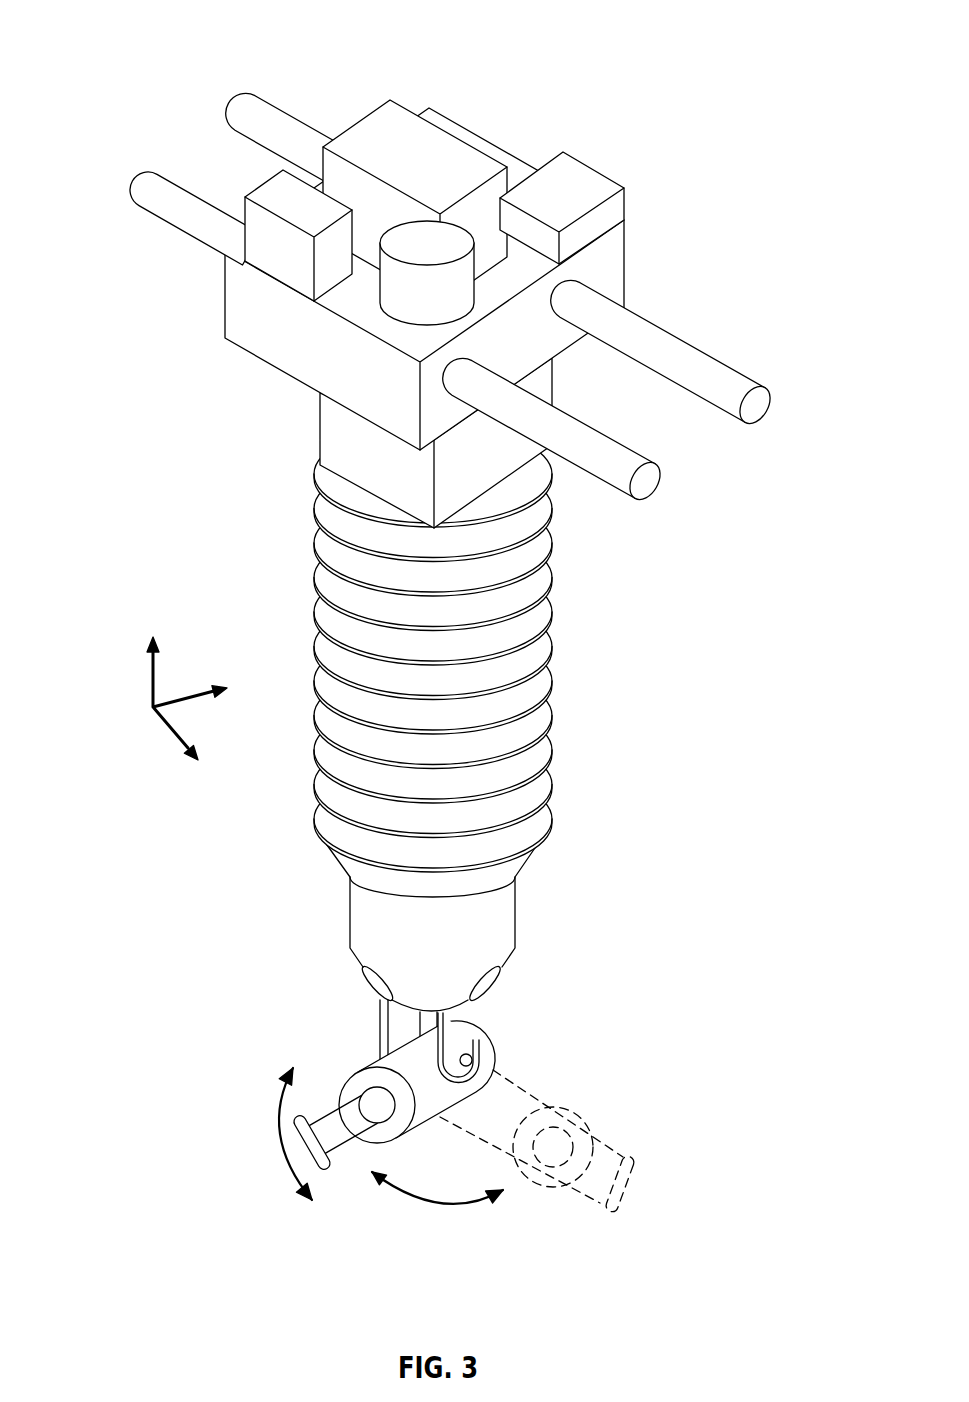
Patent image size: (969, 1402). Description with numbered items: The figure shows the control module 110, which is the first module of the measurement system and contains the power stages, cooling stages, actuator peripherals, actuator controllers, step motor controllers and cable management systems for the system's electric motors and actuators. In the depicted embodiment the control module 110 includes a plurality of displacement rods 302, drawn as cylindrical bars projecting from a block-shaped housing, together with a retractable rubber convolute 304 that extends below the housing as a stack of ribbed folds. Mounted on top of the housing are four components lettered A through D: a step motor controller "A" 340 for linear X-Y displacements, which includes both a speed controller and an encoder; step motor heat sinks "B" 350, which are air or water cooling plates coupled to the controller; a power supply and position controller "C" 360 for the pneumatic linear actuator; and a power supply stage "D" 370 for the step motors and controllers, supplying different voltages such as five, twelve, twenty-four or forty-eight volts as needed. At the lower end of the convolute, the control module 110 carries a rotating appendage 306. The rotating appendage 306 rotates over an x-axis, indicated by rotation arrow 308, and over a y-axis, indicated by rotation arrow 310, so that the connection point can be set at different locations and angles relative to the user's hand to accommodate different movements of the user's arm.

The control module 110 is at (139, 44).
The displacement rods 302 is at (148, 218).
The retractable rubber convolute 304 is at (553, 718).
The rotating appendage 306 is at (493, 1063).
The rotation arrow 308 is at (440, 1203).
The rotation arrow 310 is at (262, 1132).
The step motor controller "A" 340 is at (428, 245).
The step motor heat sinks "B" 350 is at (290, 197).
The power supply and position controller "C" 360 is at (371, 127).
The power supply stage "D" 370 is at (552, 178).